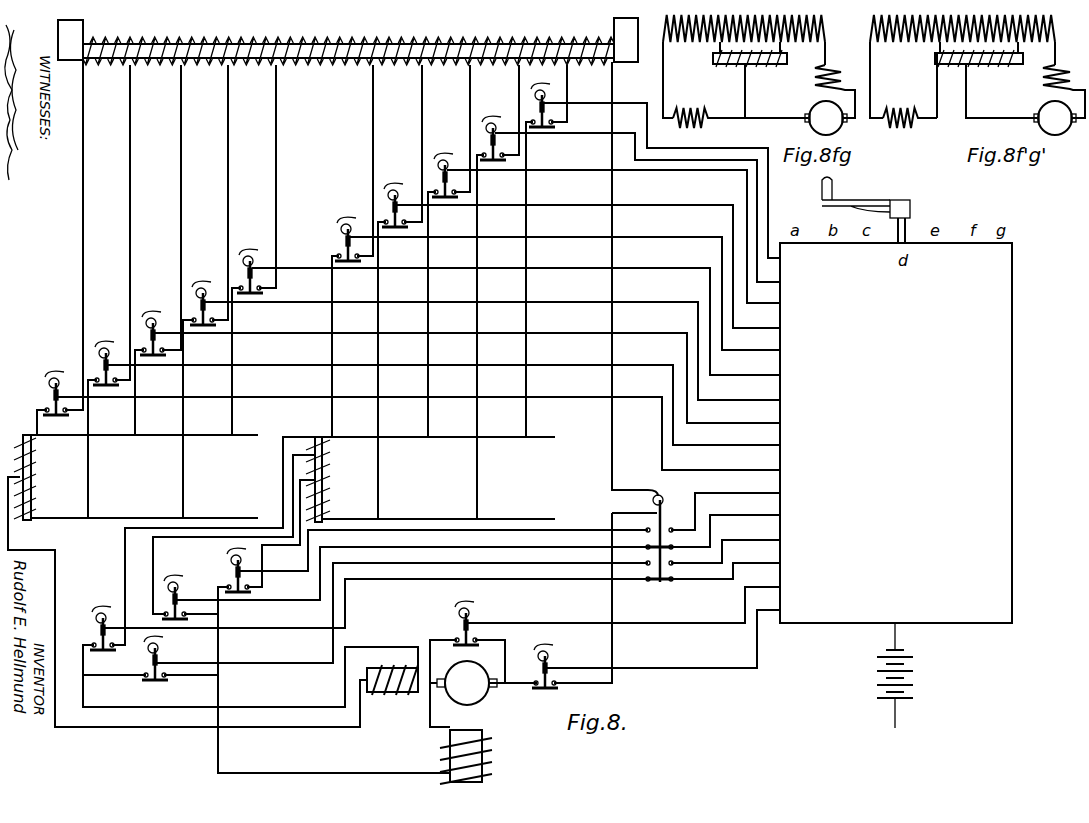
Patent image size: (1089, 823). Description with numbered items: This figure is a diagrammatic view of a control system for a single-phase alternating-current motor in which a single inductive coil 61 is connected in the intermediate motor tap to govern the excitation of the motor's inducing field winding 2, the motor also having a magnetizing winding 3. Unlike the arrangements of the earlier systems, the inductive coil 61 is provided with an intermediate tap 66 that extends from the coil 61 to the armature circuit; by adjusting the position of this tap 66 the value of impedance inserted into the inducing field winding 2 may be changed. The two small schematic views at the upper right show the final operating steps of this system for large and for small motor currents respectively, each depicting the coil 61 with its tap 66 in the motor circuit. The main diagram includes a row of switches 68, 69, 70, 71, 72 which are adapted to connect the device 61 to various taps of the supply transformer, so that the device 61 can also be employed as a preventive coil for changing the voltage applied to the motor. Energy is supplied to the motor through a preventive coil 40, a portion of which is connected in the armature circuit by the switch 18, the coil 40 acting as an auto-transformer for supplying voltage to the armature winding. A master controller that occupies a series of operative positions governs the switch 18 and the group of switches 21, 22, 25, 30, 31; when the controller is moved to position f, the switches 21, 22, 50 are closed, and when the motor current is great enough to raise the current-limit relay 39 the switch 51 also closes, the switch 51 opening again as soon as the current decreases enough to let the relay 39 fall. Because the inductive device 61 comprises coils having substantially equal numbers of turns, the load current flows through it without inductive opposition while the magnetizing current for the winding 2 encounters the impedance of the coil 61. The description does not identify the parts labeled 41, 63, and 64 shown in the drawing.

In FIG. 8, the inducing field winding 2 is at (398, 697).
In FIG. 8, the magnetizing winding 3 is at (489, 750).
In FIG. 8, the switch 18 is at (478, 612).
In FIG. 8, the switch 21 is at (56, 386).
In FIG. 8, the switch 22 is at (106, 354).
In FIG. 8, the switch 25 is at (153, 323).
In FIG. 8, the switch 30 is at (203, 291).
In FIG. 8, the switch 31 is at (250, 257).
In FIG. 8, the current-limit relay 39 is at (664, 506).
In FIG. 8, the preventive coil 40 is at (35, 478).
In FIG. 8, the battery 41 is at (915, 676).
In FIG. 8, the switch 50 is at (540, 668).
In FIG. 8, the switch 51 is at (150, 660).
In FIG. 8, the inductive coil 61 is at (325, 478).
In FIG. 8fg, the inductive coil 61 is at (733, 64).
In FIG. 8, the relay 63 is at (96, 625).
In FIG. 8, the contact line 64 is at (360, 520).
In FIG. 8, the intermediate tap 66 is at (153, 563).
In FIG. 8f'g', the intermediate tap 66 is at (983, 64).
In FIG. 8, the switch 68 is at (348, 226).
In FIG. 8, the switch 69 is at (395, 194).
In FIG. 8, the switch 70 is at (445, 163).
In FIG. 8, the switch 71 is at (493, 126).
In FIG. 8, the switch 72 is at (553, 93).